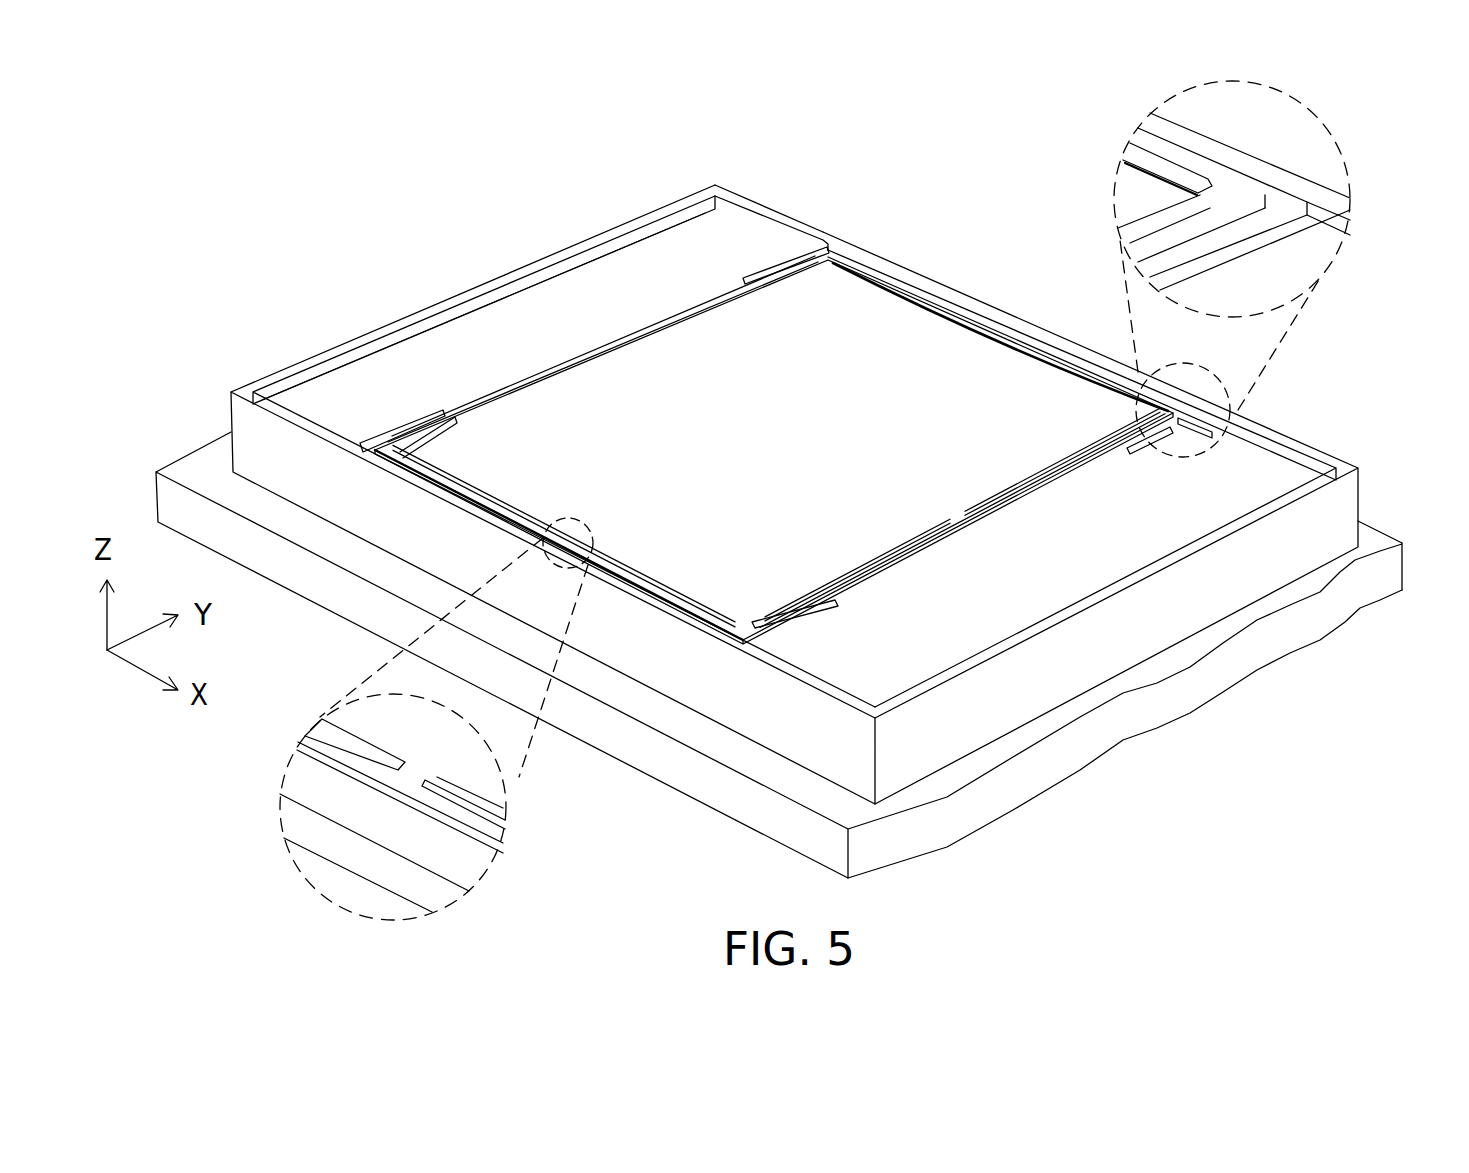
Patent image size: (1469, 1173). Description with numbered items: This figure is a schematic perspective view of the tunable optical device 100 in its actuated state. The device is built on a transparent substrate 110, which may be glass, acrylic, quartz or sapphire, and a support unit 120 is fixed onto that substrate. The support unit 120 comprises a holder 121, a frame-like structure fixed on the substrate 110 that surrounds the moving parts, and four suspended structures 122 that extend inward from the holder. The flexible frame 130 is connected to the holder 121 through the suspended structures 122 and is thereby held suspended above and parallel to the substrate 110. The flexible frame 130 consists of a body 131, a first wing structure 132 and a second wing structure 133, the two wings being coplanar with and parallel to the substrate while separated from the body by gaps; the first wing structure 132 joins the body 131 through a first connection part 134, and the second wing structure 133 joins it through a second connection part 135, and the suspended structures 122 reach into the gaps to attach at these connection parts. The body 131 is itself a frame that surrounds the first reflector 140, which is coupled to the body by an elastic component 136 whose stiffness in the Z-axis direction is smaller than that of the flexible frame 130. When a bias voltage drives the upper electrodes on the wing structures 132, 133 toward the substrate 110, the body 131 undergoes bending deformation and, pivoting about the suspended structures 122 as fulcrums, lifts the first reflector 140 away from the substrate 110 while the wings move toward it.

The tunable optical device 100 is at (1428, 868).
The substrate 110 is at (193, 460).
The support unit 120 is at (850, 552).
The holder 121 is at (385, 337).
The suspended structures 122 is at (1368, 183).
The flexible frame 130 is at (837, 500).
The body 131 is at (1147, 146).
The first wing structure 132 is at (562, 305).
The second wing structure 133 is at (1255, 465).
The first connection part 134 is at (697, 302).
The second connection part 135 is at (960, 533).
The elastic component 136 is at (1210, 210).
The first reflector 140 is at (797, 440).